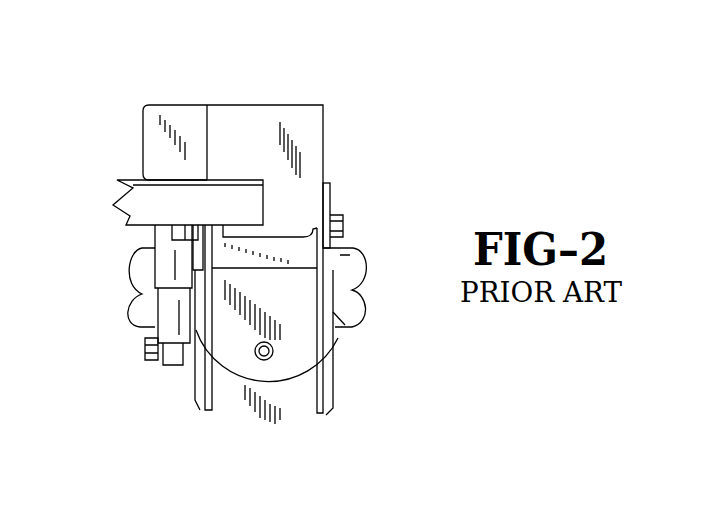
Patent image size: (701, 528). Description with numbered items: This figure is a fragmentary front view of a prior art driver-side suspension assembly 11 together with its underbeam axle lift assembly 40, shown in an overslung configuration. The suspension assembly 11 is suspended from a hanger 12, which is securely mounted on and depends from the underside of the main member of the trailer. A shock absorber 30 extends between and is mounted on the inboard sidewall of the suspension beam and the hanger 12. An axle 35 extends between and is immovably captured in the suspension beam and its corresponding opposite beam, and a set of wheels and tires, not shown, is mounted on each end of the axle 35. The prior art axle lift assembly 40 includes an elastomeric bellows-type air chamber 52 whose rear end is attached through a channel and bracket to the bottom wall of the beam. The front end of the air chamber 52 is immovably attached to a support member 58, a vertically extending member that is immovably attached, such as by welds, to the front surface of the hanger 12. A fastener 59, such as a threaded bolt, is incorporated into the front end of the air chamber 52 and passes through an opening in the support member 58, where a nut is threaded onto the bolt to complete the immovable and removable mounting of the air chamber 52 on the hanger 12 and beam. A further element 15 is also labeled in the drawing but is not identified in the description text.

The suspension assembly 11 is at (246, 84).
The hanger 12 is at (323, 152).
The mounting plate 15 is at (343, 226).
The shock absorber 30 is at (173, 249).
The axle 35 is at (355, 308).
The air chamber 52 is at (327, 355).
The support member 58 is at (300, 407).
The fastener 59 is at (260, 360).
The axle lift assembly 40 is at (181, 403).